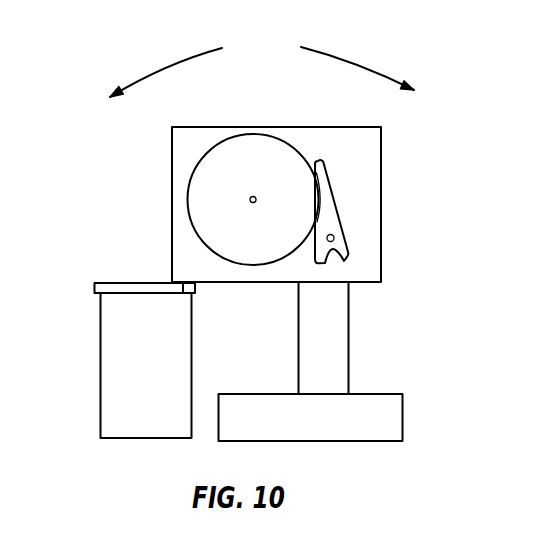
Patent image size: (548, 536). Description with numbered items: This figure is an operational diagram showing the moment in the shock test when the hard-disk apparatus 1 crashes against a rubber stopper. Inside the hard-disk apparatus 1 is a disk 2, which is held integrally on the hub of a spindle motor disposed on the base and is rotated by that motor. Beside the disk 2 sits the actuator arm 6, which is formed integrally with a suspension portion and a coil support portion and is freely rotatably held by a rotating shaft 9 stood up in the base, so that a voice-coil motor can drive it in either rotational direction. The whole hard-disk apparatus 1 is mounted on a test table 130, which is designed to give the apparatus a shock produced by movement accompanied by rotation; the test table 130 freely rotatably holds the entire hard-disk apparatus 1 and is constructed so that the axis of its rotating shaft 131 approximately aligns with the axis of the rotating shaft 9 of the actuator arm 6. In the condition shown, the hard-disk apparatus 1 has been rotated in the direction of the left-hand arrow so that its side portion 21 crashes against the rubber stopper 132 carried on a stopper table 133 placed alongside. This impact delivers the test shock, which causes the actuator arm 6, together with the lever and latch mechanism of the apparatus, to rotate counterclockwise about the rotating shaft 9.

The hard-disk apparatus 1 is at (128, 60).
The disk 2 is at (210, 177).
The actuator arm 6 is at (325, 203).
The rotating shaft 9 is at (385, 224).
The rotating shaft 131 is at (334, 238).
The side portion 21 is at (187, 295).
The test table 130 is at (336, 367).
The rubber stopper 132 is at (118, 283).
The stopper table 133 is at (115, 358).